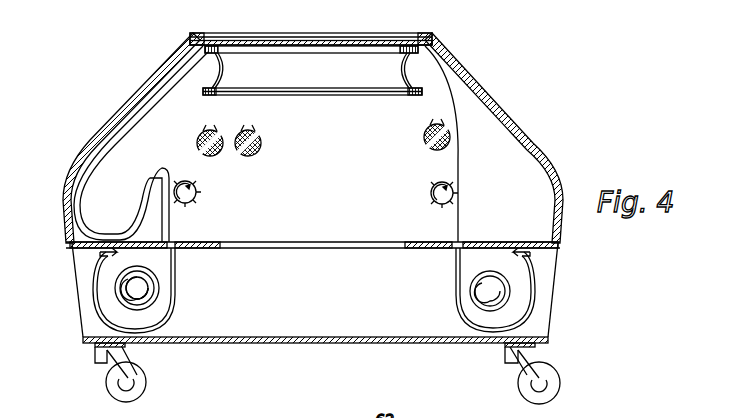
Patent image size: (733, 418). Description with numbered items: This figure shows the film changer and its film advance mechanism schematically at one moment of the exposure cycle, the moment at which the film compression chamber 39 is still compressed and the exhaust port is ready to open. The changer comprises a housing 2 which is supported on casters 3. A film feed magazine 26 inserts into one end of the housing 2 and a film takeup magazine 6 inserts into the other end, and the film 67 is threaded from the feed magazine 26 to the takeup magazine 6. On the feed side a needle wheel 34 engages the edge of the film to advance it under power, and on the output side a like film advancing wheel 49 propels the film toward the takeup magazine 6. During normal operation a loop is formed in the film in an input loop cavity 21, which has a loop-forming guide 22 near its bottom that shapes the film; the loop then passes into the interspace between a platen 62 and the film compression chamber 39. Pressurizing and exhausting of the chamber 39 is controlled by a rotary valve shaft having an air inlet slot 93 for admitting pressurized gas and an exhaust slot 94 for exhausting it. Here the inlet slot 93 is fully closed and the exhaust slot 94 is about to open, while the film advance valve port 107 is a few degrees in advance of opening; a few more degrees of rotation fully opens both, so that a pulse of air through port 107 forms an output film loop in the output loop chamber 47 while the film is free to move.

The platen 62 is at (308, 36).
The film compression chamber 39 is at (321, 80).
The film 67 is at (105, 136).
The housing 2 is at (498, 104).
The input loop cavity 21 is at (117, 201).
The output loop chamber 47 is at (523, 199).
The loop-forming guide 22 is at (68, 237).
The air inlet slot 93 is at (205, 130).
The exhaust slot 94 is at (257, 134).
The film advance valve port 107 is at (432, 126).
The needle wheel 34 is at (197, 196).
The film advancing wheel 49 is at (434, 203).
The film feed magazine 26 is at (177, 290).
The film takeup magazine 6 is at (533, 294).
The casters 3 is at (110, 383).